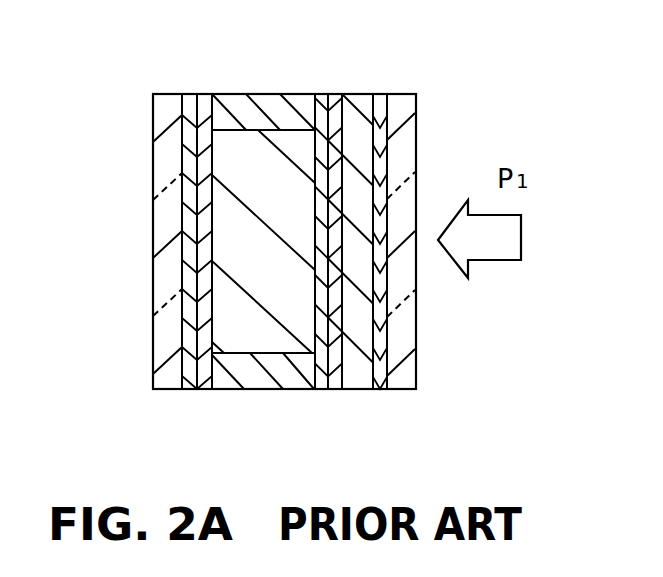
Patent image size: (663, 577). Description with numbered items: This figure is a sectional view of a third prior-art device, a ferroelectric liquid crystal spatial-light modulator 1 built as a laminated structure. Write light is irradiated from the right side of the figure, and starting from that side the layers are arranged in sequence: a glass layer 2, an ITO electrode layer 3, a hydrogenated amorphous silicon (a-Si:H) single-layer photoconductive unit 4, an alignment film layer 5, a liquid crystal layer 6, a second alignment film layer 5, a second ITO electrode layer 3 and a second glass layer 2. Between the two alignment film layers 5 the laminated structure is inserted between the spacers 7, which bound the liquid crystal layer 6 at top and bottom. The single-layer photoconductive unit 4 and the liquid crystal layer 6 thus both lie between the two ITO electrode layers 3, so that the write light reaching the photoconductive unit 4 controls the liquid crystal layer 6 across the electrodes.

The ferroelectric liquid crystal spatial-light modulator 1 is at (439, 107).
The glass layer 2 is at (165, 107).
The ITO electrode layer 3 is at (191, 376).
The hydrogenated amorphous silicon (a-Si:H) single-layer photoconductive unit 4 is at (338, 108).
The alignment film layer 5 is at (204, 375).
The liquid crystal layer 6 is at (233, 147).
The spacer 7 is at (277, 105).